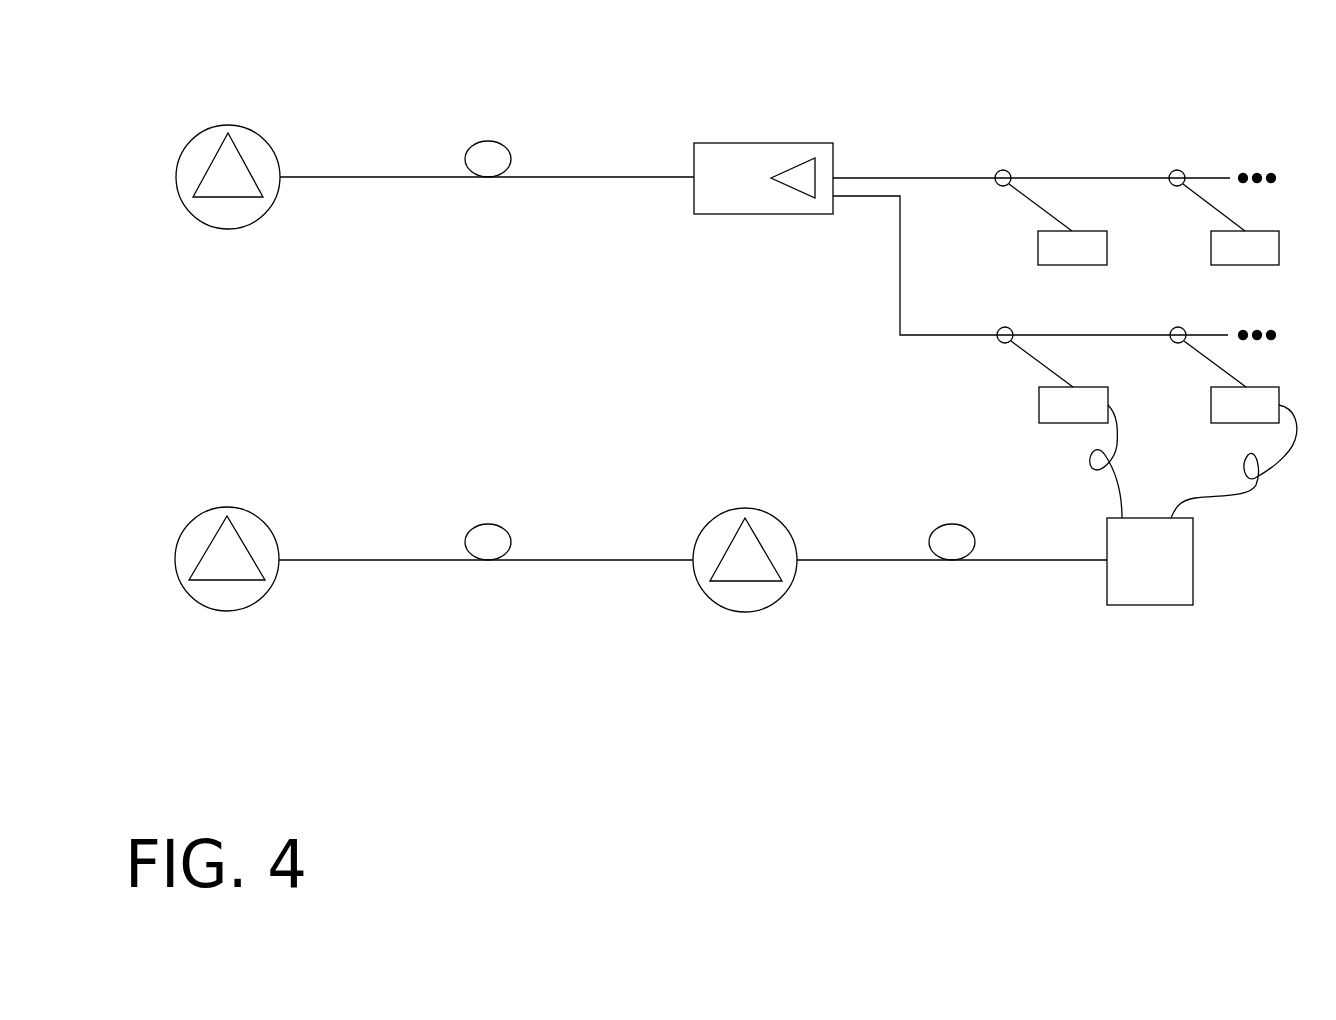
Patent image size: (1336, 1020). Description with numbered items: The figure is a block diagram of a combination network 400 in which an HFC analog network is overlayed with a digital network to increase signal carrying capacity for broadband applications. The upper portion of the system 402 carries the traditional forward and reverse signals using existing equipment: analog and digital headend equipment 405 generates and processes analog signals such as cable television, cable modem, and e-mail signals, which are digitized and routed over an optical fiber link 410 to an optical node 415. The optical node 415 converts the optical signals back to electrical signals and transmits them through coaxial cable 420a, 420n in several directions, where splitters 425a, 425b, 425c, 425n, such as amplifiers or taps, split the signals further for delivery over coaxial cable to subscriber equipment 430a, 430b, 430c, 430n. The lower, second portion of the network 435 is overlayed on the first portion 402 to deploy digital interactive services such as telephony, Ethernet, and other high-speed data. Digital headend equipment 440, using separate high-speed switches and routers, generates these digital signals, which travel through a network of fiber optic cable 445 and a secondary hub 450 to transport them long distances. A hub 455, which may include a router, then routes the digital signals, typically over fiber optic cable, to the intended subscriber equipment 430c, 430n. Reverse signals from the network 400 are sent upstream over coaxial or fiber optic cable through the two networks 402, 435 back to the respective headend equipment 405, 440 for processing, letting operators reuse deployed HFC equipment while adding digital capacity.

The network 400 is at (808, 763).
The portion of the system 402 is at (367, 107).
The analog and digital headend equipment 405 is at (228, 125).
The optical fiber link 410 is at (538, 177).
The optical node 415 is at (710, 143).
The coaxial cable 420a is at (873, 178).
The coaxial cable 420n is at (900, 247).
The splitter 425a is at (1003, 170).
The splitter 425b is at (1177, 170).
The splitter 425c is at (1005, 327).
The splitter 425n is at (1178, 327).
The subscriber equipment 430a is at (1055, 265).
The subscriber equipment 430b is at (1228, 265).
The subscriber equipment 430c is at (1070, 423).
The subscriber equipment 430n is at (1243, 423).
The second portion of the network 435 is at (348, 612).
The digital headend equipment 440 is at (227, 507).
The fiber optic cable 445 is at (538, 560).
The secondary hub 450 is at (745, 508).
The hub 455 is at (1125, 605).